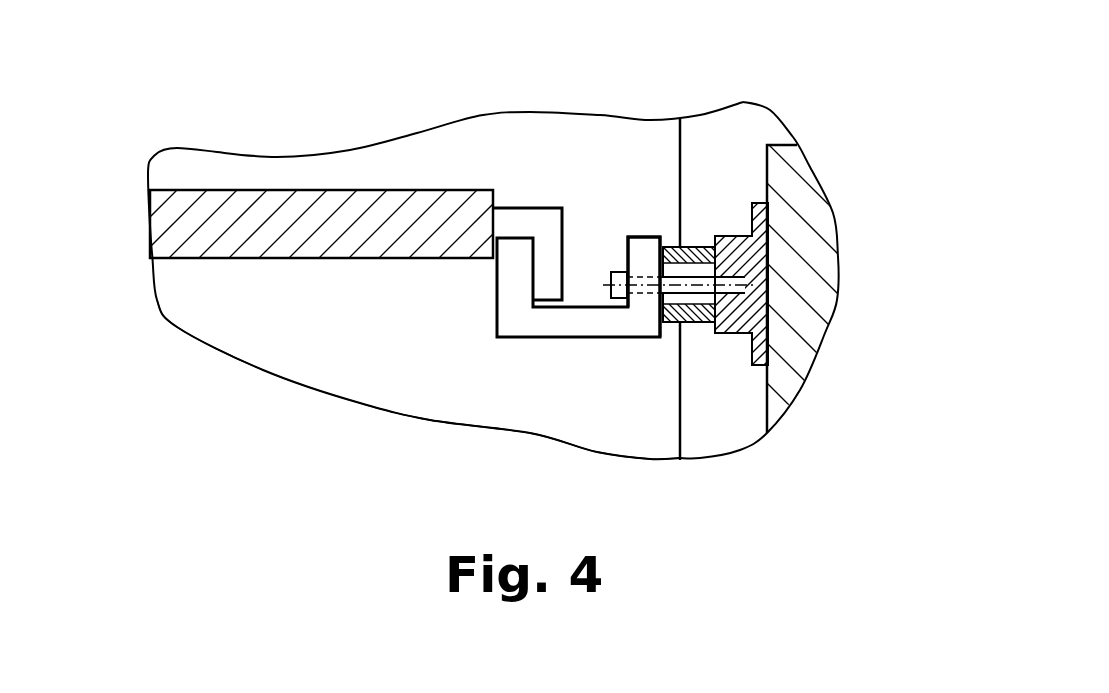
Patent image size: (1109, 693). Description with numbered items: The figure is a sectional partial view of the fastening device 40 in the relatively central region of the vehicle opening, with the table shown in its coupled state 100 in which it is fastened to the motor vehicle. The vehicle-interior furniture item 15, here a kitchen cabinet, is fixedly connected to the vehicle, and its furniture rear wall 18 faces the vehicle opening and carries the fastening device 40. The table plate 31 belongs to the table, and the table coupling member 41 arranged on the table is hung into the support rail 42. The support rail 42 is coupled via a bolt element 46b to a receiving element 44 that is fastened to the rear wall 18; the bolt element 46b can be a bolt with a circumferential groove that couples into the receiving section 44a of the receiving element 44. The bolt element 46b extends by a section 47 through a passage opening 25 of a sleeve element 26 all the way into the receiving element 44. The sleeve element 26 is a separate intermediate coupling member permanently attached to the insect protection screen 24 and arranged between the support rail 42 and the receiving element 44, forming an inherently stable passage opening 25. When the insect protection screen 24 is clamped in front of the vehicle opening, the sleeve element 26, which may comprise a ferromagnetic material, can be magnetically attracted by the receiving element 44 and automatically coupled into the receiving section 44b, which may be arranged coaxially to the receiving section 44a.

The coupled state 100 is at (300, 340).
The table plate 31 is at (263, 218).
The table coupling member 41 is at (523, 222).
The support rail 42 is at (510, 312).
The fastening device 40 is at (490, 392).
The section 47 is at (658, 340).
The sleeve element 26 is at (665, 315).
The insect protection screen 24 is at (680, 147).
The receiving section 44b is at (672, 232).
The furniture rear wall 18 is at (757, 165).
The receiving section 44a is at (740, 250).
The vehicle-interior furniture item 15 is at (815, 222).
The bolt element 46b is at (770, 257).
The passage opening 25 is at (725, 302).
The receiving element 44 is at (770, 310).